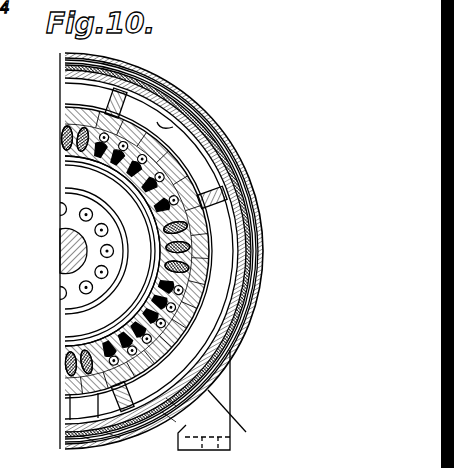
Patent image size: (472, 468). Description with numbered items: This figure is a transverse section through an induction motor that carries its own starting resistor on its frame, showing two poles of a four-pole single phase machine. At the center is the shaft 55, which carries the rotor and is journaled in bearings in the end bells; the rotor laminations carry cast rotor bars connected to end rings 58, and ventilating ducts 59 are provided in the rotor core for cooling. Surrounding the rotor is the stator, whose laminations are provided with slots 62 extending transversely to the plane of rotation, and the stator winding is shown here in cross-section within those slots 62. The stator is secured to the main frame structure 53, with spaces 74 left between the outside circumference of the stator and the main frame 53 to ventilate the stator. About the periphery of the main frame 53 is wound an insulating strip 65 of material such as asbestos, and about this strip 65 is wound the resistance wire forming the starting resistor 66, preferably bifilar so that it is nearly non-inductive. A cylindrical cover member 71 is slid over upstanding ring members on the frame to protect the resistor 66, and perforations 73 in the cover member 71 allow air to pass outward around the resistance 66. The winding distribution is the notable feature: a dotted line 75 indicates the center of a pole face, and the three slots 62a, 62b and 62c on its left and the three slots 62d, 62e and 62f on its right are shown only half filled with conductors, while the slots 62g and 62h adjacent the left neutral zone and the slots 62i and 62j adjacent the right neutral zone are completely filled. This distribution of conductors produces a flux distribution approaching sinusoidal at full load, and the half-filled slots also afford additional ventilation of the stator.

The main frame structure 53 is at (174, 171).
The shaft 55 is at (61, 270).
The end rings 58 is at (112, 251).
The ventilating ducts 59 is at (84, 290).
The slots 62 is at (192, 163).
The slot 62a is at (172, 419).
The slot 62b is at (172, 403).
The slot 62c is at (227, 370).
The slot 62d is at (230, 352).
The slot 62e is at (233, 335).
The slot 62f is at (238, 320).
The slot 62g is at (254, 257).
The slot 62h is at (250, 233).
The slot 62i is at (113, 437).
The slot 62j is at (90, 440).
The insulating strip 65 is at (140, 82).
The starting resistor 66 is at (226, 168).
The cylindrical cover member 71 is at (245, 313).
The perforations 73 is at (253, 290).
The spaces 74 is at (188, 130).
The dotted line 75 is at (251, 428).